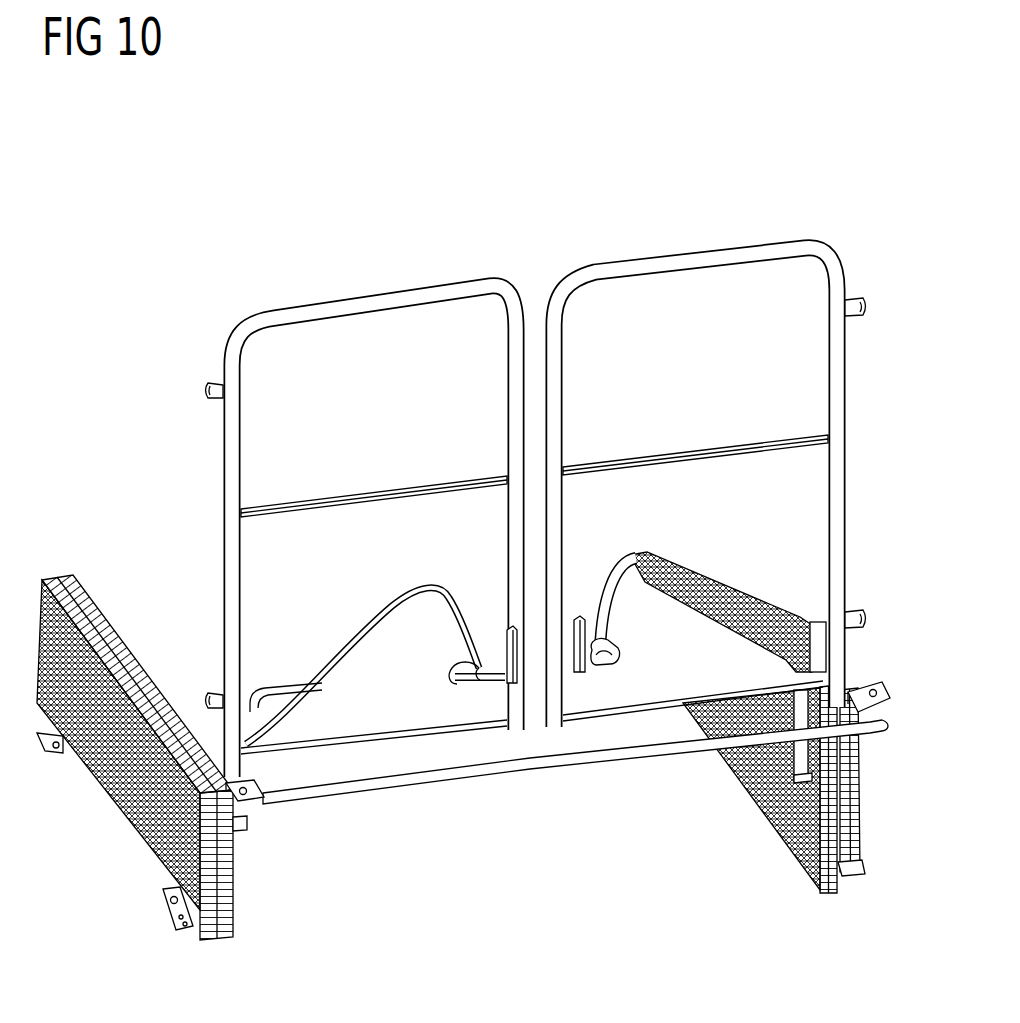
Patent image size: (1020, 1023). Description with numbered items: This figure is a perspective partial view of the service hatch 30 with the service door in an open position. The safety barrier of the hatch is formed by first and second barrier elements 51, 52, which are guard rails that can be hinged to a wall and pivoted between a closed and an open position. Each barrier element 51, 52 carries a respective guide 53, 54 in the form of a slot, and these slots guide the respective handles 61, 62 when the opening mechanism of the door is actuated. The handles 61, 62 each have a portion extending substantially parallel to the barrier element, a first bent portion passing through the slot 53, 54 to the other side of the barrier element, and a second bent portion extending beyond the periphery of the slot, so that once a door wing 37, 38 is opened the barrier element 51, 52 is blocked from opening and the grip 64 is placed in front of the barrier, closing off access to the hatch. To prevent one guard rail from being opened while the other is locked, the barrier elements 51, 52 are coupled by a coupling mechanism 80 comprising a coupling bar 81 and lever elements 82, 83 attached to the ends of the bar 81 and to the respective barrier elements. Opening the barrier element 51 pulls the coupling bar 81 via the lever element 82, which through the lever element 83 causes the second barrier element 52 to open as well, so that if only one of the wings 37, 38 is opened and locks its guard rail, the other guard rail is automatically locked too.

The service hatch 30 is at (126, 220).
The first wing of the service door 37 is at (240, 947).
The second wing of the service door 38 is at (877, 898).
The first barrier element 51 is at (343, 306).
The second barrier element 52 is at (707, 262).
The first guide 53 is at (360, 630).
The second guide 54 is at (733, 600).
The first handle 61 is at (447, 673).
The second handle 62 is at (618, 660).
The grip 64 is at (506, 647).
The coupling mechanism 80 is at (583, 822).
The coupling bar 81 is at (425, 779).
The lever element 82 is at (268, 803).
The lever element 83 is at (857, 688).